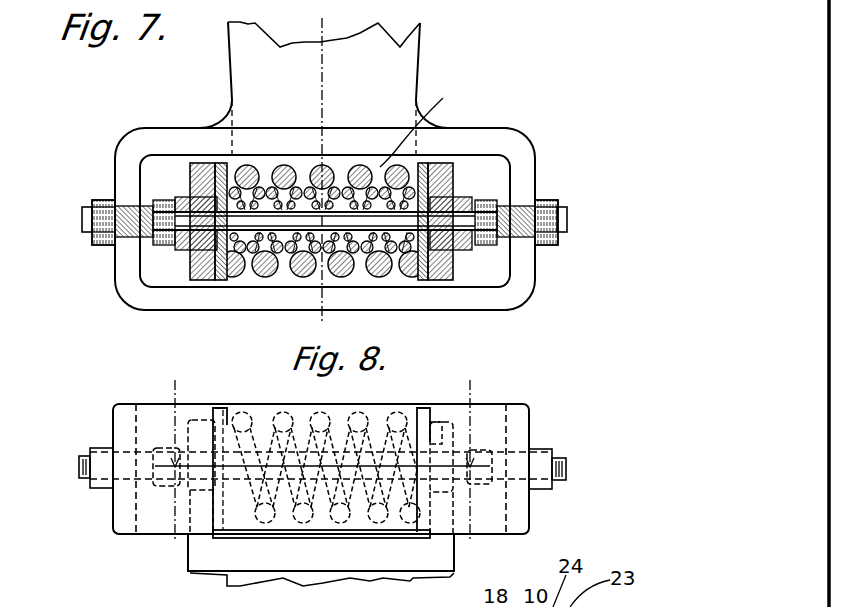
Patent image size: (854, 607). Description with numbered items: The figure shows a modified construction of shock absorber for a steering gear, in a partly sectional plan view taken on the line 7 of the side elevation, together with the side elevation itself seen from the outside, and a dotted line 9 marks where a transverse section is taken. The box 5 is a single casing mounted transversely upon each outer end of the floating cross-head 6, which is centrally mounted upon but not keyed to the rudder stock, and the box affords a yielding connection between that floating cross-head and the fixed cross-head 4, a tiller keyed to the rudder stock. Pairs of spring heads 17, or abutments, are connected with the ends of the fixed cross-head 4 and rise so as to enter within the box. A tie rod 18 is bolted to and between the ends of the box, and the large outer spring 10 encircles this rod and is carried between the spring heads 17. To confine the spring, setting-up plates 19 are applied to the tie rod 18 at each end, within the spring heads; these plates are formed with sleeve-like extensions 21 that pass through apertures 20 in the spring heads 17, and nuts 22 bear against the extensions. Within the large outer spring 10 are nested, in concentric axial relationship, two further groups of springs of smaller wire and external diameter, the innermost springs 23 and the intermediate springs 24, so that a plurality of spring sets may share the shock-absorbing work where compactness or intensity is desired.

In FIG. 7, the fixed cross-head 4 is at (415, 123).
In FIG. 8, the fixed cross-head 4 is at (320, 558).
In FIG. 7, the box 5 is at (498, 140).
In FIG. 8, the box 5 is at (147, 417).
In FIG. 7, the floating cross-head 6 is at (324, 89).
In FIG. 8, the section line 7 is at (319, 449).
In FIG. 7, the section line 9 is at (333, 25).
In FIG. 7, the spring 10 is at (262, 275).
In FIG. 8, the spring 10 is at (243, 415).
In FIG. 7, the spring heads 17 is at (207, 280).
In FIG. 8, the spring heads 17 is at (438, 420).
In FIG. 7, the tie rod 18 is at (82, 218).
In FIG. 8, the tie rod 18 is at (80, 465).
In FIG. 7, the setting-up plates 19 is at (222, 280).
In FIG. 8, the setting-up plates 19 is at (423, 407).
In FIG. 7, the apertures 20 is at (188, 248).
In FIG. 7, the sleeve-like extensions 21 is at (185, 197).
In FIG. 7, the nuts 22 is at (155, 200).
In FIG. 8, the nuts 22 is at (167, 487).
In FIG. 7, the innermost springs 23 is at (285, 278).
In FIG. 7, the intermediate springs 24 is at (394, 278).